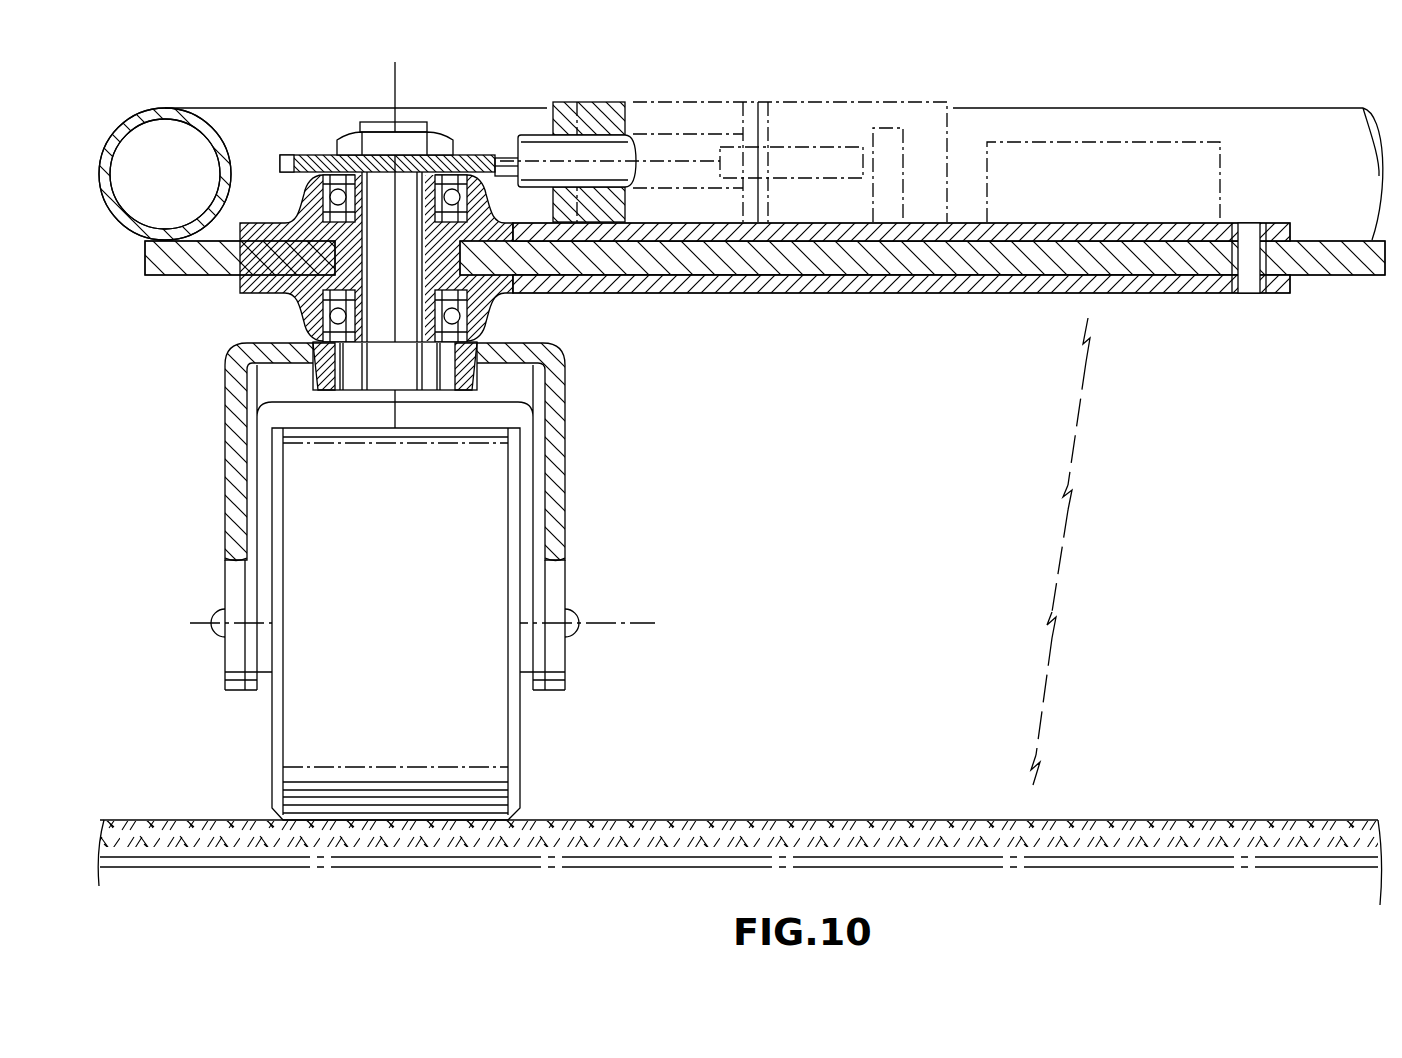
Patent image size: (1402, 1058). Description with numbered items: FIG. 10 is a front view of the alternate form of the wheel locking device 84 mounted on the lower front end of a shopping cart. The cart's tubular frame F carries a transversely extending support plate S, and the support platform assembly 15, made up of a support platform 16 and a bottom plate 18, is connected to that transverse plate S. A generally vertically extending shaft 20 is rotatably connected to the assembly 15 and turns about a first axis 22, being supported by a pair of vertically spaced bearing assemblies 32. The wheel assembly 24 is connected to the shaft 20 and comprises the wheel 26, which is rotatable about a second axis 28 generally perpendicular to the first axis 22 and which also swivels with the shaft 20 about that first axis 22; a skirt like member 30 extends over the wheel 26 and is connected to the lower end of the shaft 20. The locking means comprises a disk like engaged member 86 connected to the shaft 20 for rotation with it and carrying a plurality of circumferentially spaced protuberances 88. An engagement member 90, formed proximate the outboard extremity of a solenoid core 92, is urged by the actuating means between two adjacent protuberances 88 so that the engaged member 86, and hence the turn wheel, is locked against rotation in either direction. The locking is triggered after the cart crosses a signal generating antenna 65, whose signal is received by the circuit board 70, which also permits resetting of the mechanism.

The tubular frame F is at (163, 107).
The support platform assembly 15 is at (226, 298).
The support platform 16 is at (1060, 222).
The bottom plate 18 is at (1043, 293).
The transverse support plate S is at (855, 256).
The shaft 20 is at (377, 328).
The first axis 22 is at (400, 78).
The wheel assembly 24 is at (572, 444).
The wheel 26 is at (398, 798).
The second axis 28 is at (626, 630).
The skirt like member 30 is at (570, 522).
The bearing assemblies 32 is at (331, 197).
The signal generating antenna 65 is at (1218, 865).
The circuit board 70 is at (1108, 142).
The wheel locking device 84 is at (550, 96).
The engaged member 86 is at (314, 152).
The protuberances 88 is at (283, 163).
The engagement member 90 is at (505, 158).
The solenoid core 92 is at (640, 152).